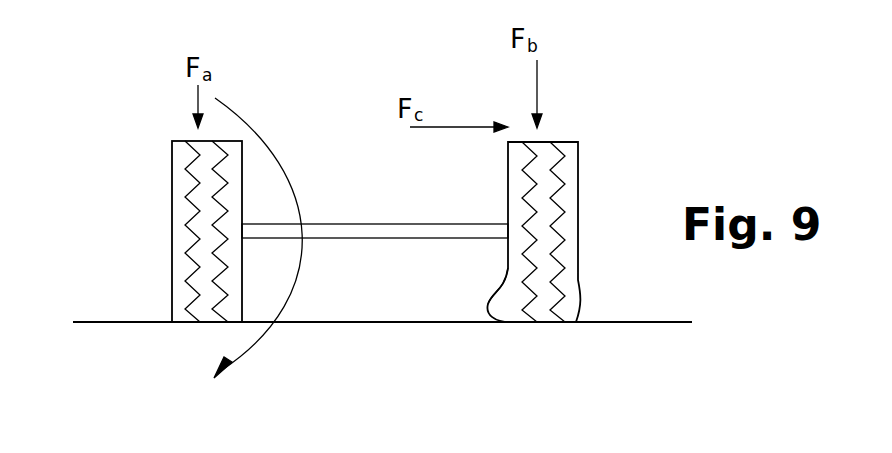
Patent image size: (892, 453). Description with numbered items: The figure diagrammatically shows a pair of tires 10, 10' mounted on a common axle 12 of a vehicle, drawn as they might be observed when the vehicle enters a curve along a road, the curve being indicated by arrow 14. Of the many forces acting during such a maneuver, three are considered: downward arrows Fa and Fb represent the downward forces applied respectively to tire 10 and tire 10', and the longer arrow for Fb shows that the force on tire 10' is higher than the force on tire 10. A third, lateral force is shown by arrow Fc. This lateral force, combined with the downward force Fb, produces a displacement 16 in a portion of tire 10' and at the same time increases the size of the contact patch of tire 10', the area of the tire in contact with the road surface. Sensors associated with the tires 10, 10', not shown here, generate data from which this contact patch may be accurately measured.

The tire 10 is at (158, 204).
The tire 10' is at (576, 209).
The common axle 12 is at (372, 224).
The arrow 14 is at (262, 330).
The displacement 16 is at (488, 306).